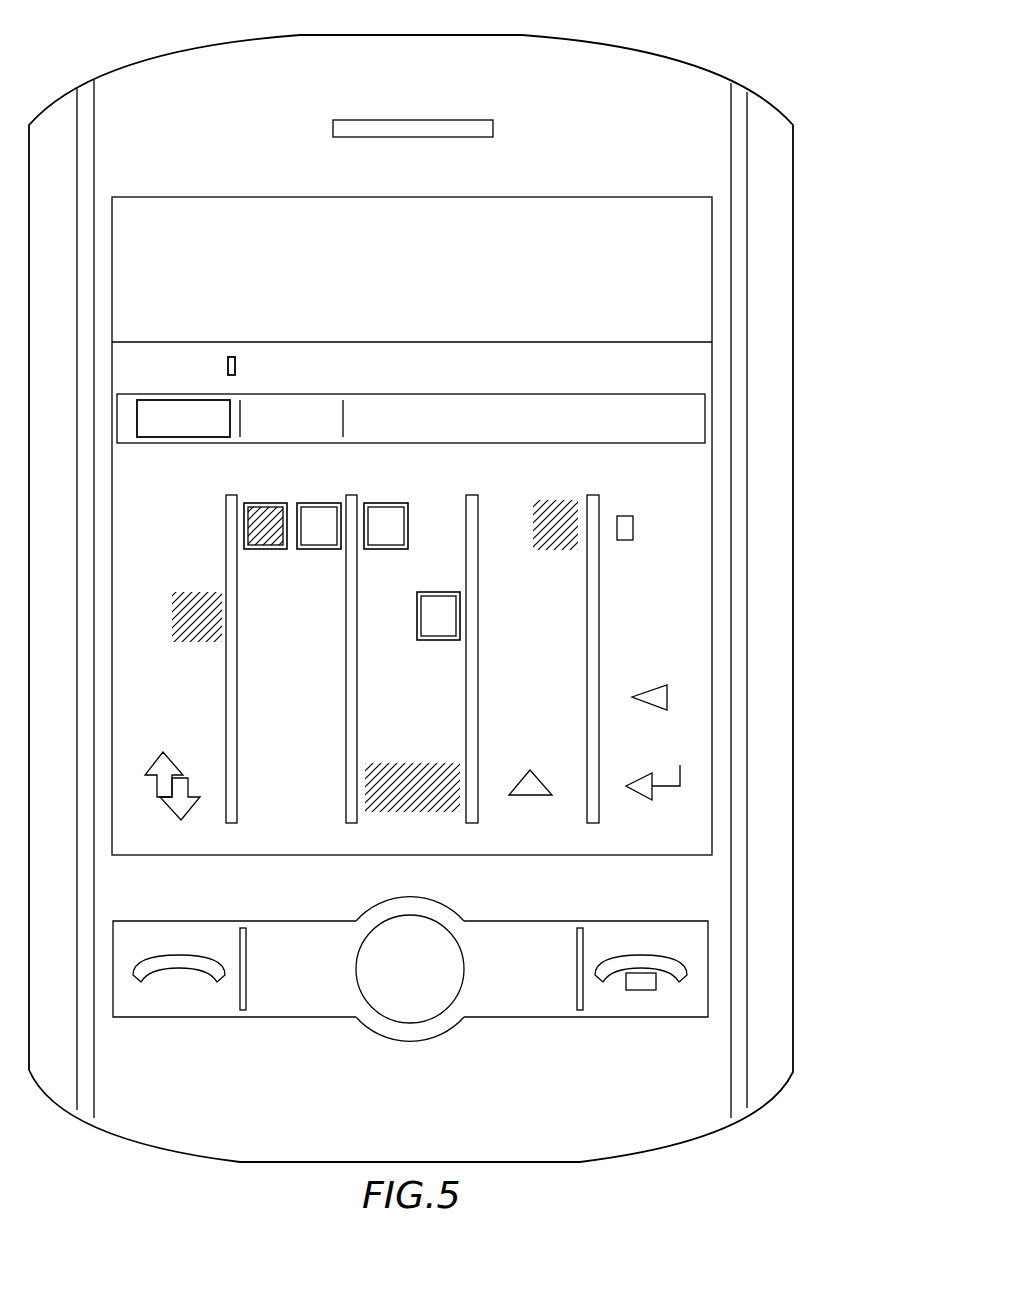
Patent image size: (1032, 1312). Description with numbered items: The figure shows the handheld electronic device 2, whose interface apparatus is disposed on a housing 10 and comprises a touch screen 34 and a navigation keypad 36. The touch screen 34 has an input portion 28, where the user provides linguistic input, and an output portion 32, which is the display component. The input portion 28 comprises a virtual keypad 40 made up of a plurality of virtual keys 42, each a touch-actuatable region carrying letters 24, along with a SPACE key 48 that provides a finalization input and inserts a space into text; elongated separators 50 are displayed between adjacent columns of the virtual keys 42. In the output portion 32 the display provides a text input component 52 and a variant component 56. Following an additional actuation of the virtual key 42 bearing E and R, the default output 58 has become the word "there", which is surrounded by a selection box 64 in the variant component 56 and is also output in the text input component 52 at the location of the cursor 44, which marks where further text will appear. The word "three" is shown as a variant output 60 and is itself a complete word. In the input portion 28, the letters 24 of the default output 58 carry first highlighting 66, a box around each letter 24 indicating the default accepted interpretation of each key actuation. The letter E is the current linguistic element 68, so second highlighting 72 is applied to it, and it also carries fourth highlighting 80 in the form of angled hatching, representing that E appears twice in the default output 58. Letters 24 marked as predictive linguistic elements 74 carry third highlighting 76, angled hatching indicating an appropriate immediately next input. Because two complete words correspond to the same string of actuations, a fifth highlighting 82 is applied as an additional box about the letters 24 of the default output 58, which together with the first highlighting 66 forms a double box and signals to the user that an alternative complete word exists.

The handheld electronic device 2 is at (660, 29).
The housing 10 is at (703, 63).
The input portion 28 is at (124, 660).
The output portion 32 is at (126, 368).
The touch screen 34 is at (610, 206).
The navigation keypad 36 is at (505, 922).
The virtual keypad 40 is at (668, 567).
The virtual keys 42 is at (160, 612).
The cursor 44 is at (236, 367).
The SPACE key 48 is at (400, 806).
The elongated separators 50 is at (344, 812).
The text input component 52 is at (199, 358).
The variant component 56 is at (226, 454).
The default output 58 is at (181, 430).
The variant output 60 is at (300, 405).
The selection box 64 is at (140, 445).
The first highlighting 66 is at (305, 504).
The current linguistic element 68 is at (247, 533).
The second highlighting 72 is at (250, 497).
The predictive linguistic elements 74 is at (548, 518).
The third highlighting 76 is at (556, 550).
The fourth highlighting 80 is at (255, 549).
The fifth highlighting 82 is at (247, 512).
The letters 24 is at (270, 505).